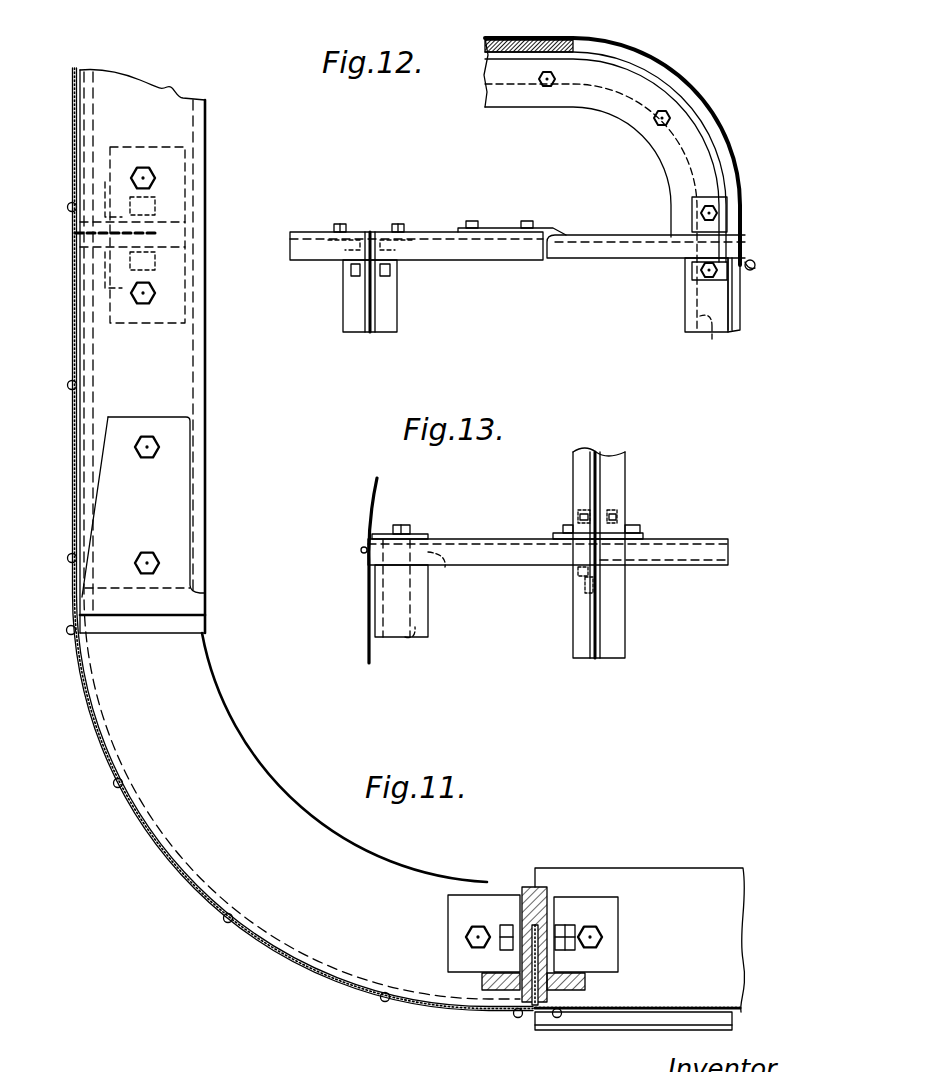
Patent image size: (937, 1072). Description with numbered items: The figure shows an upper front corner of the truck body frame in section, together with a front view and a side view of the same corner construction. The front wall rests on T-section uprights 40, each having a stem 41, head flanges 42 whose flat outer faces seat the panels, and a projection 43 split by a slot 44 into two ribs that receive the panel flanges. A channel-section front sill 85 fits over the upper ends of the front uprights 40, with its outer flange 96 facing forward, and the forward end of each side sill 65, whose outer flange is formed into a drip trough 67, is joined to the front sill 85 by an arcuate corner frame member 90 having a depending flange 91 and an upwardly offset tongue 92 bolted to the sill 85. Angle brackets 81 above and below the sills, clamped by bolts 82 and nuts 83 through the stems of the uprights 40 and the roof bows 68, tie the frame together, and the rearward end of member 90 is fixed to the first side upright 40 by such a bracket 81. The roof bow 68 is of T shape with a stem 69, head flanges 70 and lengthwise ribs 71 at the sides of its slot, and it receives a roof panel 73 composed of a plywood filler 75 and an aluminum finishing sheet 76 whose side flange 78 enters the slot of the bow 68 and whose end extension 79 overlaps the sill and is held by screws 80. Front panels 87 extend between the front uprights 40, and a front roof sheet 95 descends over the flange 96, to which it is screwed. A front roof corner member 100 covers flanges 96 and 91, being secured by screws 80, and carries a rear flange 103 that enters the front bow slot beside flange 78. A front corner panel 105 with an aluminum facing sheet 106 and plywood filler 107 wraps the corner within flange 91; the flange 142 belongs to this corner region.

In FIG. 11, the upright 40 is at (178, 242).
In FIG. 12, the upright 40 is at (684, 331).
In FIG. 13, the upright 40 is at (428, 623).
In FIG. 12, the stem 41 is at (692, 336).
In FIG. 12, the flanges 42 is at (733, 311).
In FIG. 13, the flanges 42 is at (385, 640).
In FIG. 12, the projection 43 is at (742, 298).
In FIG. 13, the projection 43 is at (378, 621).
In FIG. 12, the slot 44 is at (712, 340).
In FIG. 13, the slot 44 is at (416, 640).
In FIG. 11, the sill 65 is at (700, 868).
In FIG. 12, the sill 65 is at (676, 250).
In FIG. 13, the sill 65 is at (708, 540).
In FIG. 11, the drip trough 67 is at (588, 1026).
In FIG. 12, the drip trough 67 is at (758, 267).
In FIG. 13, the drip trough 67 is at (712, 566).
In FIG. 11, the roof bow 68 is at (544, 884).
In FIG. 12, the roof bow 68 is at (532, 106).
In FIG. 13, the roof bow 68 is at (625, 472).
In FIG. 11, the stem 69 is at (533, 926).
In FIG. 12, the stem 69 is at (610, 95).
In FIG. 11, the head flanges 70 is at (482, 985).
In FIG. 12, the head flanges 70 is at (705, 128).
In FIG. 11, the ribs 71 is at (526, 1012).
In FIG. 12, the ribs 71 is at (730, 153).
In FIG. 12, the roof panel 73 is at (632, 58).
In FIG. 12, the filler 75 is at (486, 42).
In FIG. 11, the finishing sheet 76 is at (655, 1008).
In FIG. 12, the finishing sheet 76 is at (700, 112).
In FIG. 11, the flange 78 is at (548, 959).
In FIG. 12, the flange 78 is at (580, 88).
In FIG. 12, the end extension 79 is at (750, 258).
In FIG. 11, the screws 80 is at (67, 208).
In FIG. 12, the screws 80 is at (750, 248).
In FIG. 11, the angle bracket 81 is at (180, 152).
In FIG. 12, the angle bracket 81 is at (352, 250).
In FIG. 13, the angle bracket 81 is at (612, 505).
In FIG. 11, the bolts 82 is at (152, 178).
In FIG. 12, the bolts 82 is at (348, 224).
In FIG. 13, the bolts 82 is at (619, 532).
In FIG. 11, the nuts 83 is at (158, 206).
In FIG. 13, the nuts 83 is at (573, 561).
In FIG. 11, the front sill 85 is at (207, 357).
In FIG. 12, the front sill 85 is at (428, 231).
In FIG. 13, the front sill 85 is at (446, 568).
In FIG. 11, the front panels 87 is at (92, 124).
In FIG. 11, the corner frame member 90 is at (218, 732).
In FIG. 12, the corner frame member 90 is at (618, 234).
In FIG. 13, the corner frame member 90 is at (506, 540).
In FIG. 11, the flange 91 is at (206, 894).
In FIG. 12, the flange 91 is at (612, 259).
In FIG. 13, the flange 91 is at (527, 561).
In FIG. 11, the tongue 92 is at (170, 497).
In FIG. 12, the tongue 92 is at (498, 227).
In FIG. 13, the tongue 92 is at (421, 535).
In FIG. 11, the front roof sheet 95 is at (72, 132).
In FIG. 11, the flange 96 is at (80, 327).
In FIG. 11, the front roof corner member 100 is at (180, 868).
In FIG. 13, the front roof corner member 100 is at (369, 510).
In FIG. 11, the flange 103 is at (530, 952).
In FIG. 11, the front corner panel 105 is at (277, 956).
In FIG. 11, the facing sheet 106 is at (330, 981).
In FIG. 11, the plywood filler 107 is at (92, 408).
In FIG. 13, the rail flange 142 is at (369, 606).